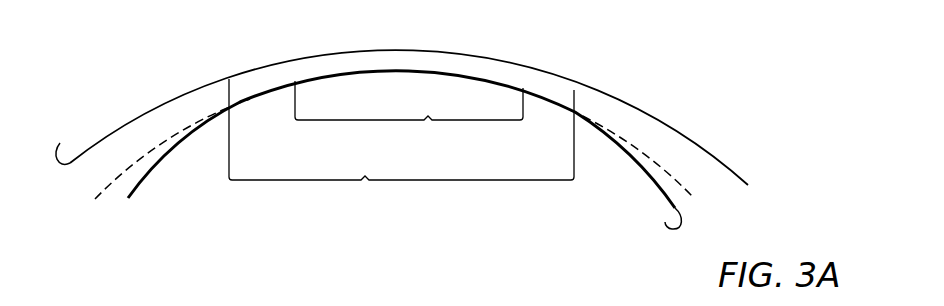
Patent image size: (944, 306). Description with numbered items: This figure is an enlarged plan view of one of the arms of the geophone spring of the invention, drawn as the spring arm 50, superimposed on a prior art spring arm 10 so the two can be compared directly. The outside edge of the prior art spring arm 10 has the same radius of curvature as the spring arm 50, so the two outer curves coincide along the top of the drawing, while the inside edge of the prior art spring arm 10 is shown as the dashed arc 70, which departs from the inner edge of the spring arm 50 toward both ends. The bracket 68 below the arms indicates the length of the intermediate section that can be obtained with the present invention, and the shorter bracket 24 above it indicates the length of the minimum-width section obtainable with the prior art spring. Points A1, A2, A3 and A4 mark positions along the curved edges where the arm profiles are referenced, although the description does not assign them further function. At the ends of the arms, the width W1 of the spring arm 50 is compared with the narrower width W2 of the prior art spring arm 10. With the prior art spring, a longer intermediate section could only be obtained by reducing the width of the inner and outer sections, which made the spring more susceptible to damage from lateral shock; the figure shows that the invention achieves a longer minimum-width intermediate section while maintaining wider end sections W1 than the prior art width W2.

The spring arm 50 is at (424, 48).
The prior art spring arm 10 is at (185, 137).
The dashed arc 70 is at (700, 195).
The bracket 24 is at (409, 119).
The bracket 68 is at (401, 147).
The point A1 on outer surface A1 is at (526, 62).
The point A2 on outer surface A2 is at (175, 96).
The point A3 on lens curve A3 is at (279, 82).
The point A4 on lens curve A4 is at (592, 108).
The end section width W1 is at (116, 126).
The prior art width W2 is at (107, 180).